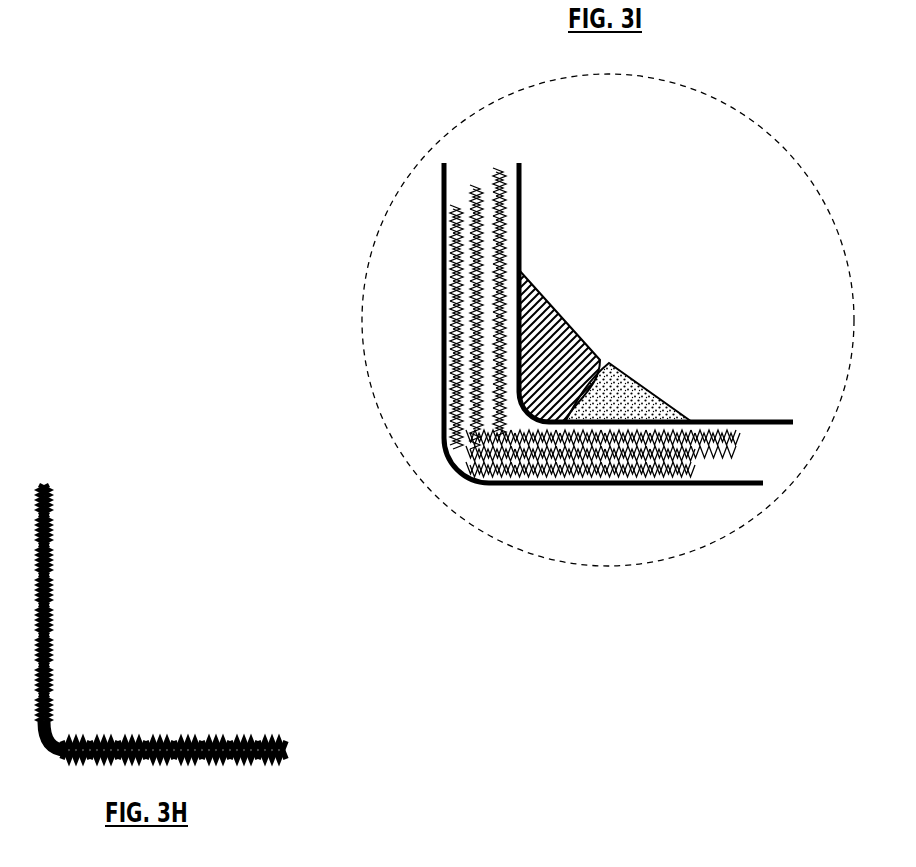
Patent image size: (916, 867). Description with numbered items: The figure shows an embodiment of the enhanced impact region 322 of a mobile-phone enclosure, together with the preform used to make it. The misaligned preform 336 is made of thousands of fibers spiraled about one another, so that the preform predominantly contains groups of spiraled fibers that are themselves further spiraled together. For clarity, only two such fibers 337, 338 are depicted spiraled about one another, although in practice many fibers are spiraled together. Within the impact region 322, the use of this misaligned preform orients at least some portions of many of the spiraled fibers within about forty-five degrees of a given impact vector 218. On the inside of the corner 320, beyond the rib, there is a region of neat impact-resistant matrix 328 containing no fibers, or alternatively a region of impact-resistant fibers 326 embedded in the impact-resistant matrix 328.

In FIG. 3I, the impact vector 218 is at (452, 475).
In FIG. 3I, the corner 320 is at (499, 485).
In FIG. 3I, the impact region 322 is at (780, 146).
In FIG. 3I, the impact-resistant fibers 326 is at (557, 313).
In FIG. 3I, the impact-resistant matrix 328 is at (455, 312).
In FIG. 3H, the misaligned preform 336 is at (214, 664).
In FIG. 3I, the spiraled fiber 337 is at (445, 272).
In FIG. 3H, the spiraled fiber 337 is at (290, 745).
In FIG. 3I, the spiraled fiber 338 is at (620, 468).
In FIG. 3H, the spiraled fiber 338 is at (280, 762).